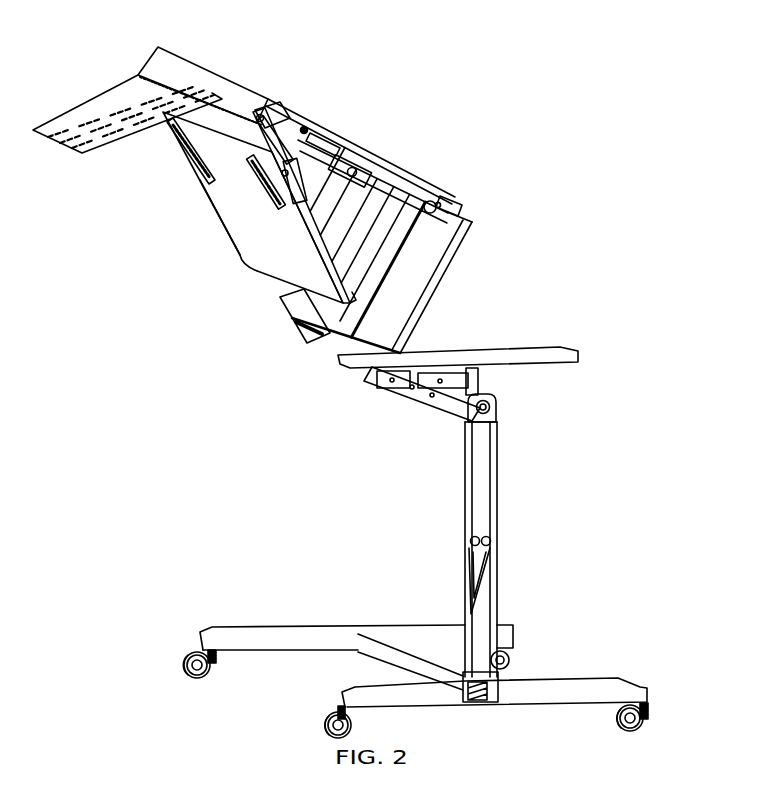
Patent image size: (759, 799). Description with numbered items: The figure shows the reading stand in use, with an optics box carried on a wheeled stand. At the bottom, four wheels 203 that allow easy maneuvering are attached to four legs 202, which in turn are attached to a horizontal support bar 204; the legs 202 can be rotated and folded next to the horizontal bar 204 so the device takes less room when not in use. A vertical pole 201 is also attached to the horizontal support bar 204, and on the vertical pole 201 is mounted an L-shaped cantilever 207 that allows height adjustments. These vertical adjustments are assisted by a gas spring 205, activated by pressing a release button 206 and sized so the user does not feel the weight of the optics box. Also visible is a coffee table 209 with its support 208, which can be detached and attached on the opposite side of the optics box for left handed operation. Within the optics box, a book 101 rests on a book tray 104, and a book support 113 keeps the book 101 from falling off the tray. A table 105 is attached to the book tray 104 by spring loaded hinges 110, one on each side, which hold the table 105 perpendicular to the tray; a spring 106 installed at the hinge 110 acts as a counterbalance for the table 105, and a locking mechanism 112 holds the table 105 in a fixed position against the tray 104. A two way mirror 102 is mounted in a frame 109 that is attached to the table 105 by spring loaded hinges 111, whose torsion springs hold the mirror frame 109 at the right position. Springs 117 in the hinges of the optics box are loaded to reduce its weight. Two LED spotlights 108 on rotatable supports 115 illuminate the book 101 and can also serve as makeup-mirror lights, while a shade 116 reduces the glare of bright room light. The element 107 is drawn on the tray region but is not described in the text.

The book 101 is at (347, 330).
The two way mirror 102 is at (233, 180).
The book tray 104 is at (287, 311).
The table 105 is at (195, 66).
The spring 106 is at (425, 200).
The tray hinge strip 107 is at (197, 70).
The LED spotlights 108 is at (300, 190).
The frame 109 is at (238, 243).
The spring loaded hinges 110 is at (453, 206).
The spring loaded hinges 111 is at (262, 120).
The locking mechanism 112 is at (333, 153).
The book support 113 is at (310, 327).
The rotatable supports 115 is at (200, 168).
The shade 116 is at (118, 115).
The springs 117 is at (298, 166).
The vertical pole 201 is at (480, 632).
The legs 202 is at (567, 690).
The wheels 203 is at (645, 712).
The horizontal support bar 204 is at (393, 660).
The gas spring 205 is at (478, 570).
The release button 206 is at (490, 405).
The cantilever 207 is at (455, 400).
The support 208 is at (478, 382).
The coffee table 209 is at (535, 355).